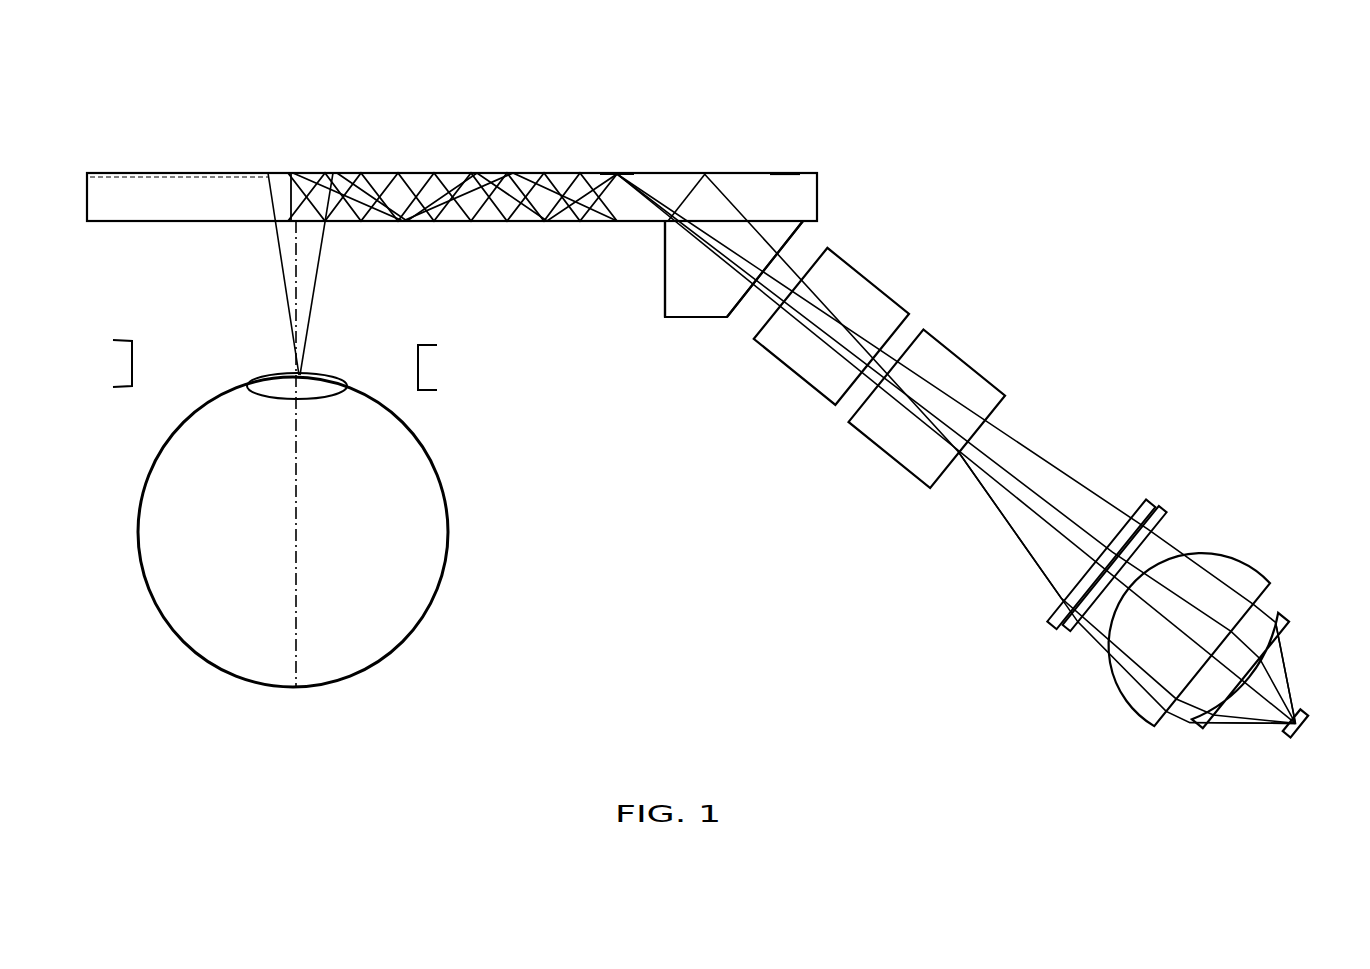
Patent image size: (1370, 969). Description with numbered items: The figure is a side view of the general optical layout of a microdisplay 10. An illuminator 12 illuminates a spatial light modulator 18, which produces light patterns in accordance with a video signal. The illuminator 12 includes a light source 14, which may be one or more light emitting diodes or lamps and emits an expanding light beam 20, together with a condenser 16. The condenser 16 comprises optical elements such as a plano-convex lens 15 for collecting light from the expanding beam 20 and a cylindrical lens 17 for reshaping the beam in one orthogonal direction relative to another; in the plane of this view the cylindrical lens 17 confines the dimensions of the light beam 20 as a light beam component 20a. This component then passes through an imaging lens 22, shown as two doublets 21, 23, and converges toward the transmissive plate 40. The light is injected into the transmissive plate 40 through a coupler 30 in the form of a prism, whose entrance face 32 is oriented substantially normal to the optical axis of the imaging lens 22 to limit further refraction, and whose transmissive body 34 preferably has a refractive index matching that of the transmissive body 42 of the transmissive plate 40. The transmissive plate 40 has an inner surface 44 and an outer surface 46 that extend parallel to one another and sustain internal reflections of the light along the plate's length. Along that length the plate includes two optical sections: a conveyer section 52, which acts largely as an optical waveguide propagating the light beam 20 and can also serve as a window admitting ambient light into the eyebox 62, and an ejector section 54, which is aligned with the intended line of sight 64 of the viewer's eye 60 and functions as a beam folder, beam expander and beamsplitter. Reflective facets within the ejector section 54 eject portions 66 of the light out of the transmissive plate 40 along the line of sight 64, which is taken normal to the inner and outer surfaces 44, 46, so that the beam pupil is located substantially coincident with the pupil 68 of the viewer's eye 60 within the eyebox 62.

The microdisplay 10 is at (921, 114).
The illuminator 12 is at (1148, 655).
The light source 14 is at (1290, 735).
The PCX (plano-convex) lens 15 is at (1195, 720).
The condenser 16 is at (1130, 723).
The cylindrical lens 17 is at (1127, 677).
The spatial light modulator 18 is at (1050, 622).
The light beam 20 is at (1283, 684).
The light beam component 20a is at (1077, 482).
The doublet 21 is at (907, 443).
The imaging lens 22 is at (884, 351).
The doublet 23 is at (807, 357).
The coupler 30 is at (664, 297).
The entrance face 32 is at (750, 300).
The transmissive body 34 is at (665, 262).
The transmissive plate 40 is at (432, 222).
The transmissive body 42 is at (805, 200).
The inner surface 44 is at (628, 218).
The outer surface 46 is at (786, 176).
The conveyer section 52 is at (818, 153).
The ejector section 54 is at (470, 148).
The viewer's eye 60 is at (448, 517).
The eyebox 62 is at (132, 363).
The line of sight 64 is at (297, 563).
The portions 66 is at (275, 242).
The pupil 68 is at (262, 388).